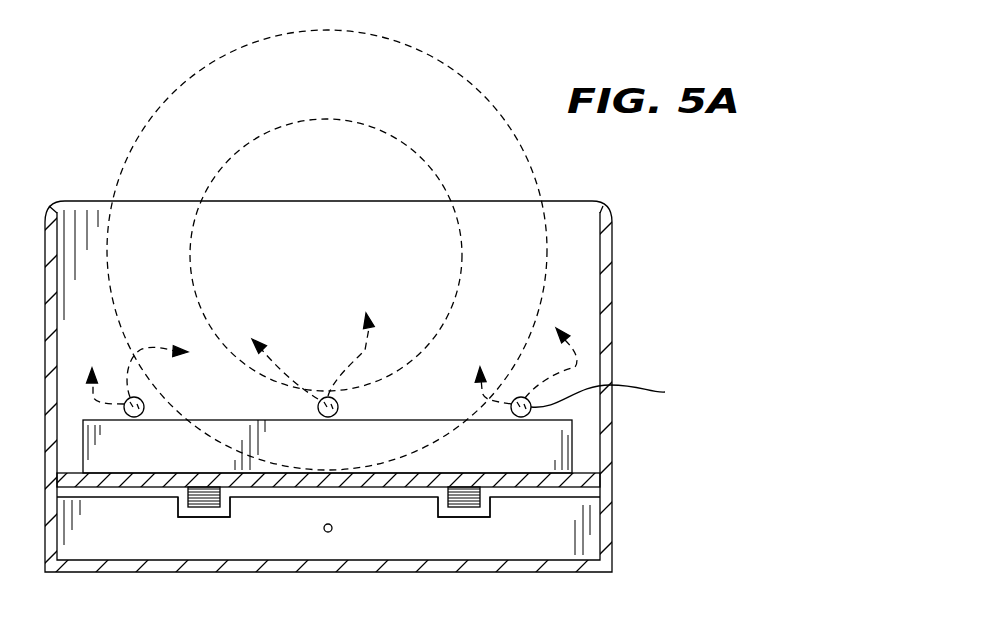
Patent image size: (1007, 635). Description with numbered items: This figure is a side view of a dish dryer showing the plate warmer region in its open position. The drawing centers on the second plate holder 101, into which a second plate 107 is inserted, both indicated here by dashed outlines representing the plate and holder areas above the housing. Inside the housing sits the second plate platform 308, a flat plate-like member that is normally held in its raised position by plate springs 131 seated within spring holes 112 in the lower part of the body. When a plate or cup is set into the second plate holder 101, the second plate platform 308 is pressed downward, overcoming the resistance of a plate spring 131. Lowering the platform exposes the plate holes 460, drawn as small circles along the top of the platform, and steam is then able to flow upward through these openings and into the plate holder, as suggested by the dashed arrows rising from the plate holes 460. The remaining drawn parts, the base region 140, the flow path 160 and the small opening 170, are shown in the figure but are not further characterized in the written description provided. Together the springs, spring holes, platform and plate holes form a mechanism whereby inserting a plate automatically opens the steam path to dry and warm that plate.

The second plate holder 101 is at (330, 252).
The second plate 107 is at (195, 113).
The spring holes 112 is at (213, 510).
The plate springs 131 is at (200, 505).
The base housing 140 is at (560, 527).
The flow path 160 is at (623, 392).
The aperture 170 is at (332, 528).
The second plate platform 308 is at (563, 435).
The plate holes 460 is at (145, 406).